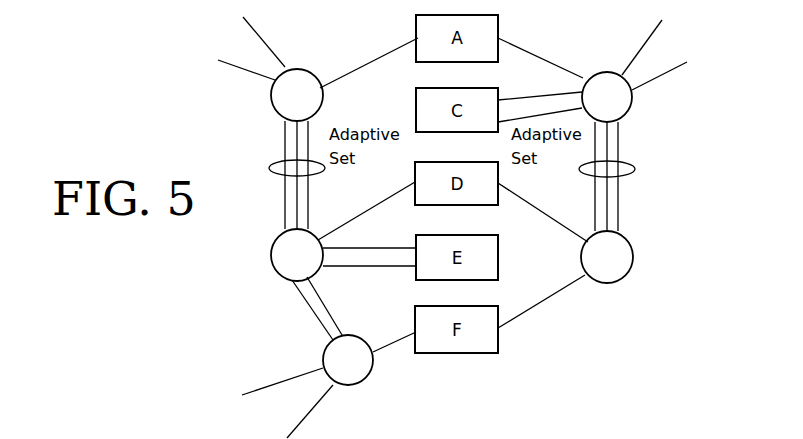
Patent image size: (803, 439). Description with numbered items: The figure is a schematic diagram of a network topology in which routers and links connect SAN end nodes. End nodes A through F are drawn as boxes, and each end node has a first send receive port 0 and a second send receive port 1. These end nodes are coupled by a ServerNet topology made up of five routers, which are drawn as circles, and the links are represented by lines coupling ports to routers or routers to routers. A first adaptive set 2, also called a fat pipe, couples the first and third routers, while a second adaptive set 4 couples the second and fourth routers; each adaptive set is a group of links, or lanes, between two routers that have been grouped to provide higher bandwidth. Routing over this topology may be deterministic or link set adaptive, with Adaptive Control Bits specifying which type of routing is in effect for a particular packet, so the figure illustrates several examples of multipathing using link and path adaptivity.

The first adaptive set 2 is at (270, 163).
The second adaptive set 4 is at (634, 165).
The first send receive port 0 is at (456, 184).
The second send receive port 1 is at (456, 182).